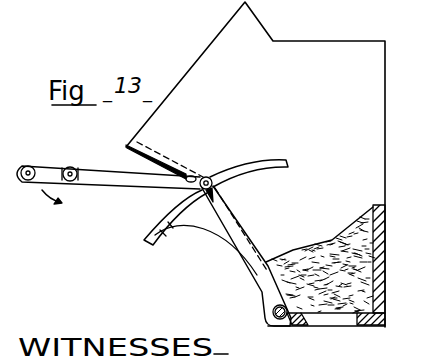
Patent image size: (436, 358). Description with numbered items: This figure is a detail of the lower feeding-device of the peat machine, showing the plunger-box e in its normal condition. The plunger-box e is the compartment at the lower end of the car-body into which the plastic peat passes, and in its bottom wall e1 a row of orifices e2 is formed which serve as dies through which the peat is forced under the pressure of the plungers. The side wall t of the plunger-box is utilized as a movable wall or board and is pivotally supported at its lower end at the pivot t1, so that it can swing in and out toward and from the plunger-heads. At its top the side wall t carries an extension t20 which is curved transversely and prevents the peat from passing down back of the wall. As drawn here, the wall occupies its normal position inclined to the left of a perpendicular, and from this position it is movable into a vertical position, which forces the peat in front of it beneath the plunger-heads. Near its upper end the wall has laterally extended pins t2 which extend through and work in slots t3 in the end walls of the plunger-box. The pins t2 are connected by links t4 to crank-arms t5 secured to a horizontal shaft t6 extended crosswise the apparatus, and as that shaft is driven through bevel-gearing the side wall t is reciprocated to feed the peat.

The side wall t is at (264, 281).
The pivot t1 is at (271, 313).
The laterally extended pins t2 is at (209, 176).
The slots t3 is at (276, 160).
The links t4 is at (105, 171).
The crank-arms t5 is at (50, 165).
The horizontal shaft t6 is at (71, 166).
The extension t20 is at (156, 233).
The plunger-box e is at (374, 238).
The bottom wall e1 is at (386, 316).
The orifices e2 is at (335, 320).